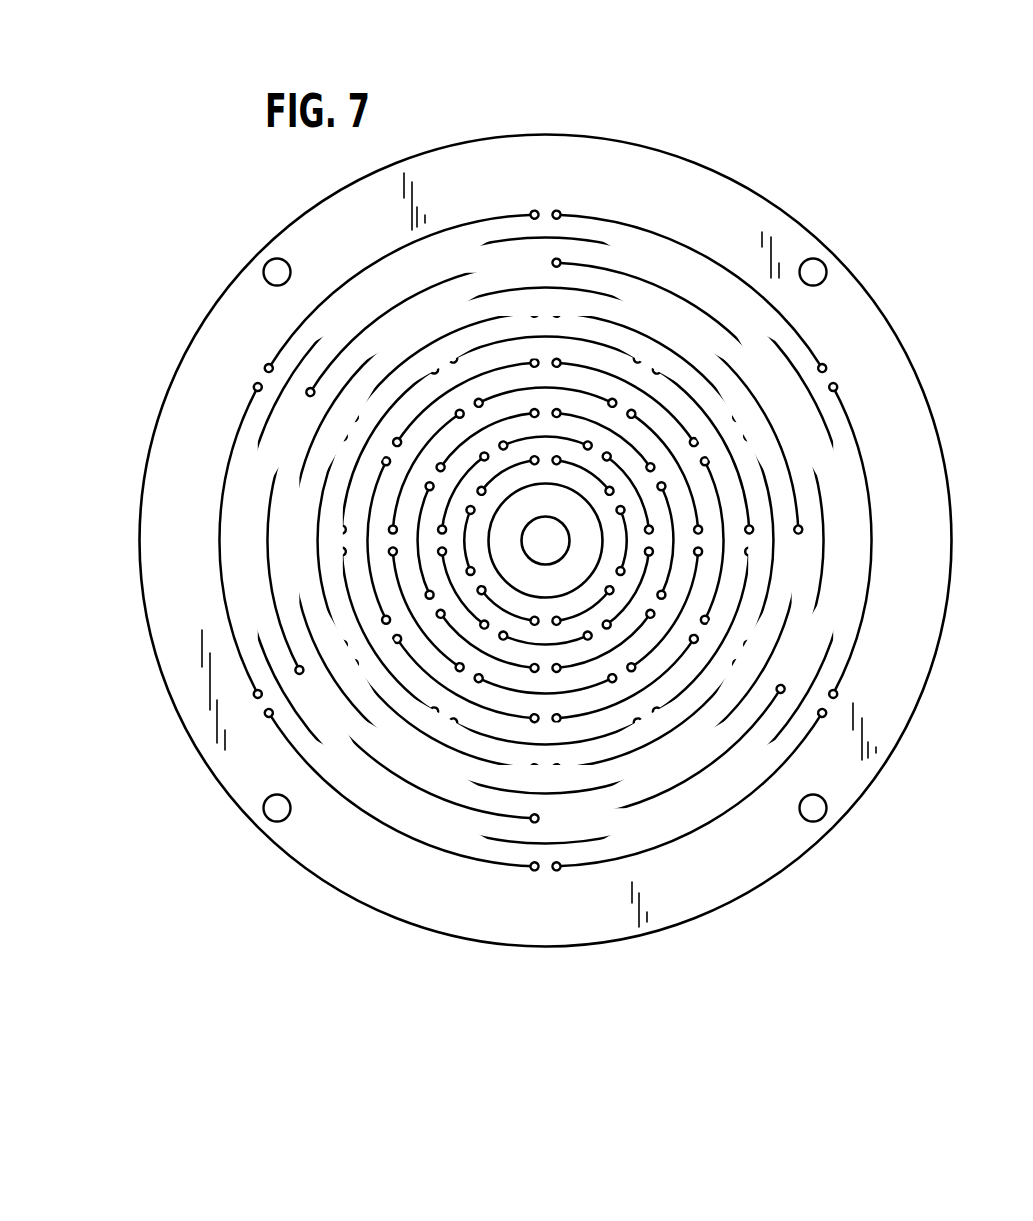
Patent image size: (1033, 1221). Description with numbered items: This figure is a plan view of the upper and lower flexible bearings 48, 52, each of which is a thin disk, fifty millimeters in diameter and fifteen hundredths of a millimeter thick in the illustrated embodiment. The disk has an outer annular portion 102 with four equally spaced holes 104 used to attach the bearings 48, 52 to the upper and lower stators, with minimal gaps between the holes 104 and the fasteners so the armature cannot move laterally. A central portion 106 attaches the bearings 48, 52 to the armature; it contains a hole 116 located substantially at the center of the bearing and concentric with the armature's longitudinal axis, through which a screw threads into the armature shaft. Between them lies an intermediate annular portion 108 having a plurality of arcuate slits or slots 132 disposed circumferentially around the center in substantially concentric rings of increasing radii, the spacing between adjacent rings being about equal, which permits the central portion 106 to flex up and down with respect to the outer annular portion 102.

The upper bearing 48 is at (477, 83).
The lower bearing 52 is at (546, 541).
The outer annular portion 102 is at (207, 522).
The holes 104 is at (288, 817).
The central portion 106 is at (455, 571).
The intermediate annular portion 108 is at (357, 528).
The hole 116 is at (541, 565).
The arcuate slits or slots 132 is at (678, 845).